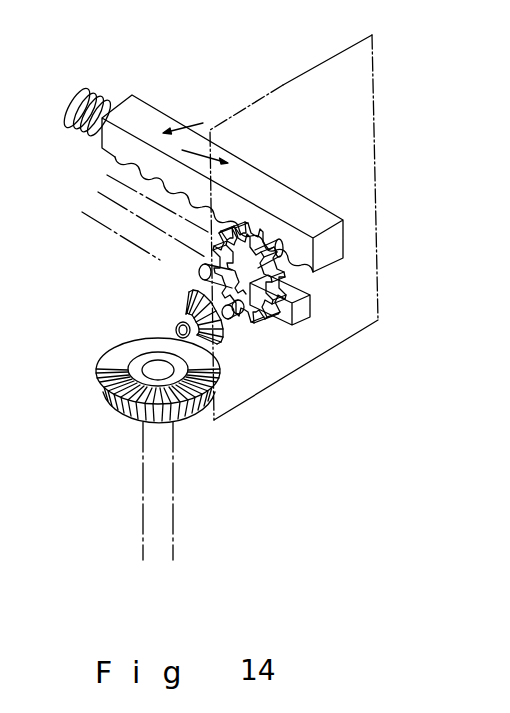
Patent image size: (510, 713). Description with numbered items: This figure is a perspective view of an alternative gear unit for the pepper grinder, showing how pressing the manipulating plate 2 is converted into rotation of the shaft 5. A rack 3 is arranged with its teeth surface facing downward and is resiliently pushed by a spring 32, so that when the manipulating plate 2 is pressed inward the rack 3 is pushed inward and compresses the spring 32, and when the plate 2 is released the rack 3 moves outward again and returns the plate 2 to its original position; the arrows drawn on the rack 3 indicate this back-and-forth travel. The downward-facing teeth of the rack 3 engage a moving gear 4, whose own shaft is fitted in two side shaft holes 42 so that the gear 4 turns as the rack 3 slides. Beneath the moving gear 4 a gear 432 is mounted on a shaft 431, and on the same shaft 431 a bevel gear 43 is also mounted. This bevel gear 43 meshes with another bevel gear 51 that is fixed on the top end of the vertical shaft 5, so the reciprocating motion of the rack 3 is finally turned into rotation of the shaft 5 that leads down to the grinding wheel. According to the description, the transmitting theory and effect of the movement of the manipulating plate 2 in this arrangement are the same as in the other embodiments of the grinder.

The manipulating plate 2 is at (363, 115).
The rack 3 is at (167, 120).
The spring 32 is at (70, 92).
The moving gear 4 is at (238, 232).
The shaft hole 42 is at (223, 287).
The bevel gear 43 is at (175, 307).
The shaft 431 is at (232, 320).
The gear 432 is at (255, 325).
The shaft 5 is at (158, 500).
The bevel gear 51 is at (110, 403).